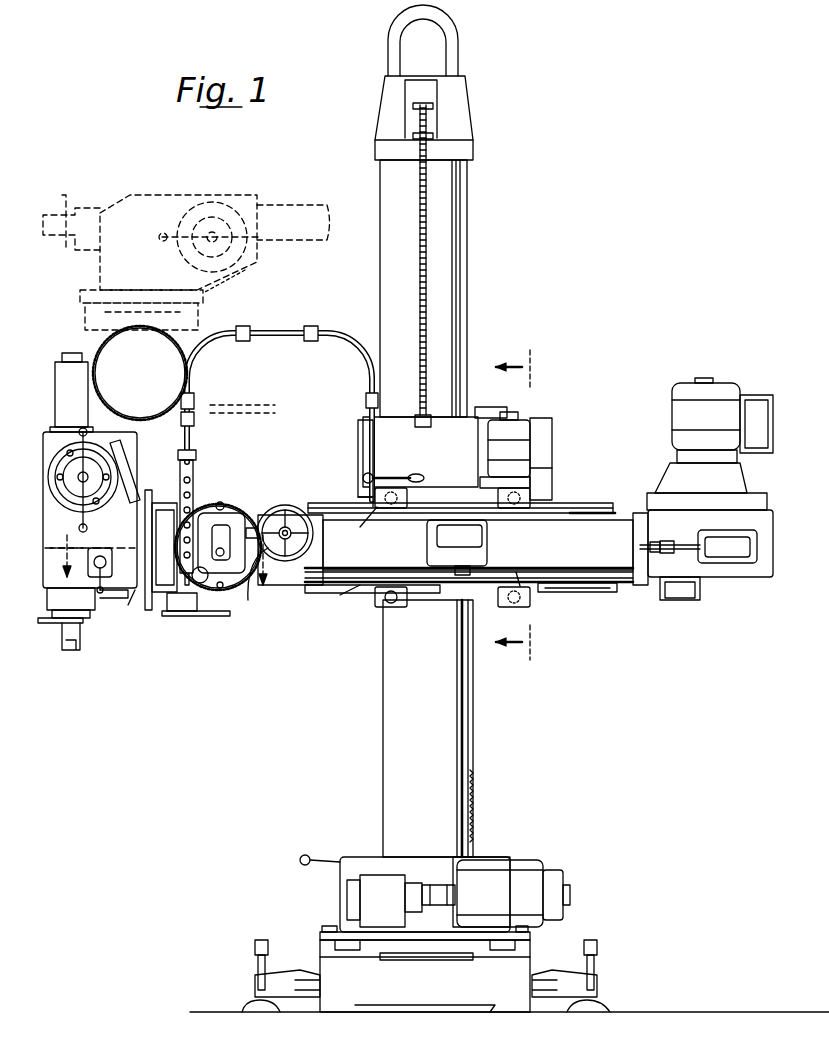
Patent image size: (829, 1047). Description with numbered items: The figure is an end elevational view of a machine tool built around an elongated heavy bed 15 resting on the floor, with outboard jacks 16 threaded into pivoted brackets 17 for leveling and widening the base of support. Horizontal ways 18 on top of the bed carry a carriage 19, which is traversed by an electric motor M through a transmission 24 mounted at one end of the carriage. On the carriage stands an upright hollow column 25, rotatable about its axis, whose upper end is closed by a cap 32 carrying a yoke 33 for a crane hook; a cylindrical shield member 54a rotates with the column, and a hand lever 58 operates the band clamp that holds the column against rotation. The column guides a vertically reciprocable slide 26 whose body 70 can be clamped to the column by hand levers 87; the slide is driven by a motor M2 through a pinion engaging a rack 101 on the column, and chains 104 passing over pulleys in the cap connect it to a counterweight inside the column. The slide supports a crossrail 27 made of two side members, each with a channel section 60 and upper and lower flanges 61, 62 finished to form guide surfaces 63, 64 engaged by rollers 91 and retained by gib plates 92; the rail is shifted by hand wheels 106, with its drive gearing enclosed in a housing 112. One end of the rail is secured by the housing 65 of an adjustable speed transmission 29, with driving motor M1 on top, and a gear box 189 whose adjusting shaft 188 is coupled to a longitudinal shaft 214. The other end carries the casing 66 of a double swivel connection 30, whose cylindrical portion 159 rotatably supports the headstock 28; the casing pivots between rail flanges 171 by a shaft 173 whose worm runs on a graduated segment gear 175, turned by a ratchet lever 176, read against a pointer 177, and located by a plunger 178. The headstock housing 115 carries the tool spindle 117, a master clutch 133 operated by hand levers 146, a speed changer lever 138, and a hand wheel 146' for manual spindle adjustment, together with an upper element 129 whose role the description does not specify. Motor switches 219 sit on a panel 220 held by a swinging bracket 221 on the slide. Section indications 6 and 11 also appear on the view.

The section line 6 is at (522, 505).
The section line 11 is at (168, 563).
The bed 15 is at (388, 1000).
The jacks 16 is at (255, 962).
The brackets 17 is at (255, 985).
The guides or ways 18 is at (322, 942).
The carriage 19 is at (530, 936).
The transmission 24 is at (375, 890).
The column 25 is at (383, 790).
The slide 26 is at (358, 587).
The crossrail 27 is at (315, 593).
The headstock 28 is at (218, 188).
The adjustable speed transmission 29 is at (733, 577).
The double swivel connection 30 is at (215, 500).
The cap 32 is at (470, 122).
The yoke 33 is at (455, 40).
The cylindrical shield member 54a is at (358, 862).
The hand lever 58 is at (300, 858).
The channel-shaped central section 60 is at (648, 560).
The upper flange 61 is at (615, 513).
The lower flange 62 is at (575, 592).
The guide surface 63 is at (590, 503).
The guide surface 64 is at (600, 592).
The housing 65 is at (770, 515).
The casing 66 is at (128, 605).
The slide body 70 is at (358, 440).
The hand levers 87 is at (400, 478).
The rollers 91 is at (390, 508).
The gib plates 92 is at (530, 568).
The rack 101 is at (476, 785).
The chains 104 is at (418, 280).
The hand wheels 106 is at (285, 505).
The housing 112 is at (487, 545).
The headstock housing 115 is at (43, 447).
The spindle 117 is at (62, 645).
The housing 129 is at (55, 385).
The master clutch 133 is at (128, 452).
The hand lever 138 is at (118, 598).
The hand levers 146 is at (85, 474).
The hand wheel 146' is at (50, 633).
The cylindrical portion 159 is at (165, 482).
The flanges 171 is at (253, 602).
The shaft 173 is at (158, 592).
The segmental worm gear 175 is at (215, 600).
The ratchet lever 176 is at (185, 616).
The pointer 177 is at (128, 540).
The spring-pressed plunger 178 is at (184, 601).
The adjusting shaft 188 is at (676, 541).
The gear box 189 is at (757, 550).
The shaft 214 is at (640, 547).
The motor switches 219 is at (193, 495).
The panel 220 is at (195, 478).
The swinging bracket 221 is at (300, 334).
The electric motor M is at (525, 872).
The driving motor M1 is at (728, 392).
The motor M2 is at (520, 430).